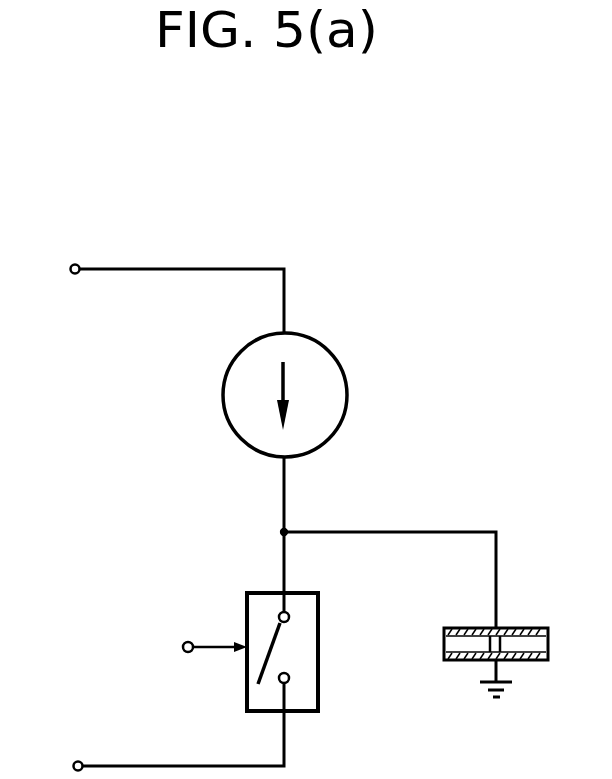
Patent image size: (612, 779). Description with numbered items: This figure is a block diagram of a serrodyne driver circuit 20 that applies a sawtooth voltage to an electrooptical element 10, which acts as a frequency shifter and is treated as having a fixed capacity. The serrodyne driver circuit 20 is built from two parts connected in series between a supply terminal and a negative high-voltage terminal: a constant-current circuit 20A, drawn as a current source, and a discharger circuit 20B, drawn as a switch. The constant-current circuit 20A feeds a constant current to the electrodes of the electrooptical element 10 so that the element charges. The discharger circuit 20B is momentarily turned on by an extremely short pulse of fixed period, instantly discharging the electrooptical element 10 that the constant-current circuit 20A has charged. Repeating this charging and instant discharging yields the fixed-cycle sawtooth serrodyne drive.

The serrodyne driver circuit 20 is at (203, 190).
The constant-current circuit 20A is at (254, 316).
The discharger circuit 20B is at (264, 573).
The electrooptical element 10 is at (567, 610).